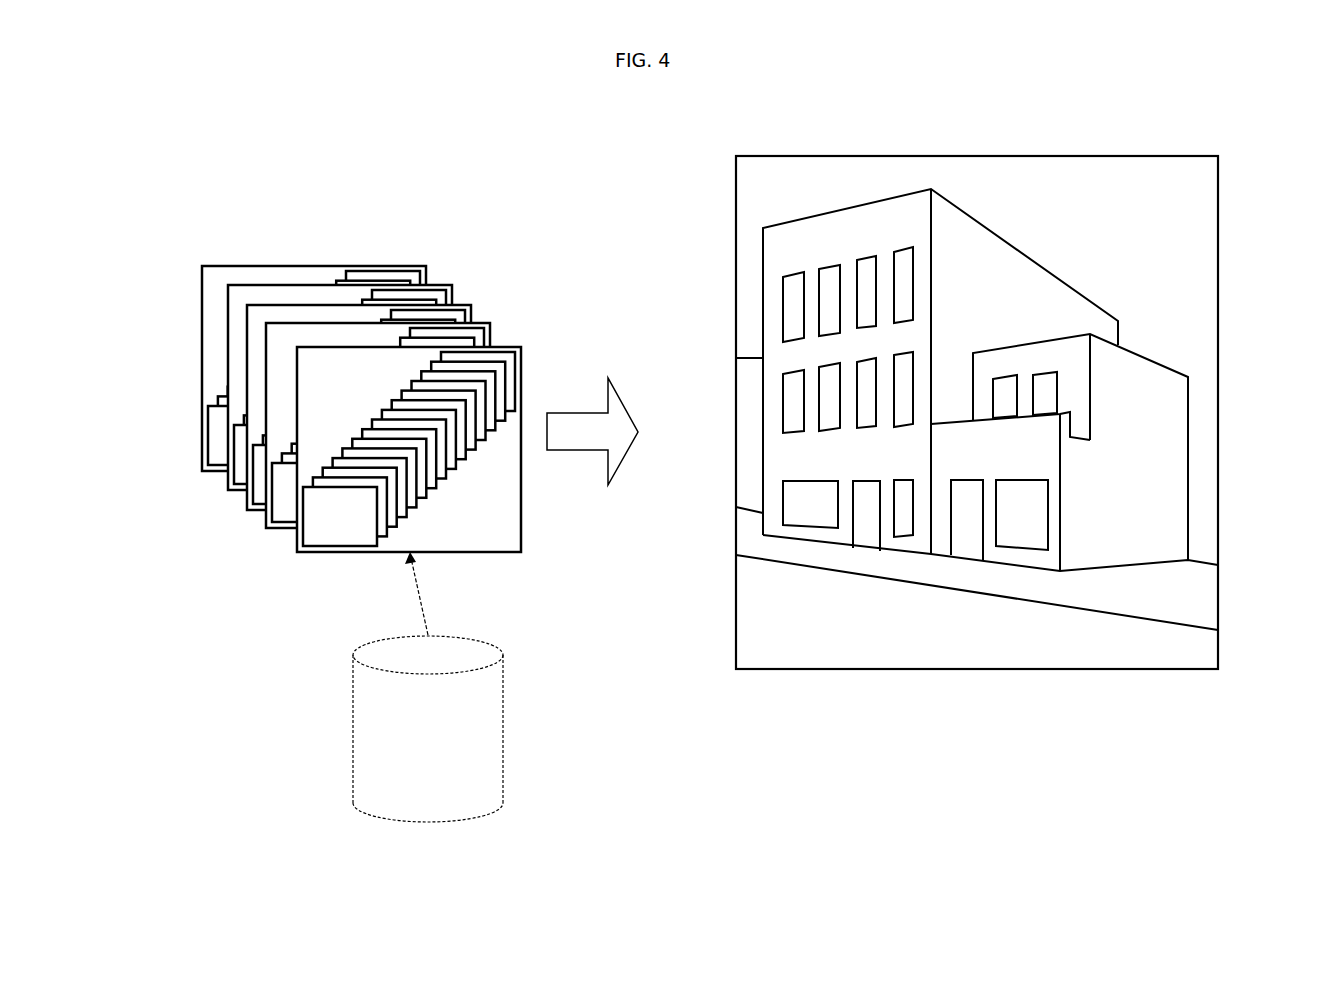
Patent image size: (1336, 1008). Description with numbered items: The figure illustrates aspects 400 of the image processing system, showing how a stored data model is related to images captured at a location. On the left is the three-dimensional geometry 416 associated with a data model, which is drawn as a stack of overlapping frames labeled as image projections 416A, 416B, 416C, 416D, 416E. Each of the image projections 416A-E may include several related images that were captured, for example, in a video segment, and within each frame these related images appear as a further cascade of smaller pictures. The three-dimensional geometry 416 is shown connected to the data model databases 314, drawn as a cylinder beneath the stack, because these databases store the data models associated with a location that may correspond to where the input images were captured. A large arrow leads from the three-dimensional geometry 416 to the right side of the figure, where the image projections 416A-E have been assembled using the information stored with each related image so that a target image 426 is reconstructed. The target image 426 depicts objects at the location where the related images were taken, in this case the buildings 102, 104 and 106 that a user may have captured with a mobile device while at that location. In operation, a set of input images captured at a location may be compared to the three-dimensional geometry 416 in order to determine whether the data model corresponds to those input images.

The aspects of the image processing system 400 is at (1247, 72).
The 3D geometry 416 is at (335, 439).
The image projection 416A is at (296, 543).
The image projection 416B is at (262, 523).
The image projection 416C is at (246, 507).
The image projection 416D is at (227, 482).
The image projection 416E is at (200, 465).
The data model database 314 is at (437, 822).
The target image 426 is at (1218, 170).
The building 102 is at (743, 393).
The building 104 is at (770, 334).
The building 106 is at (1158, 458).